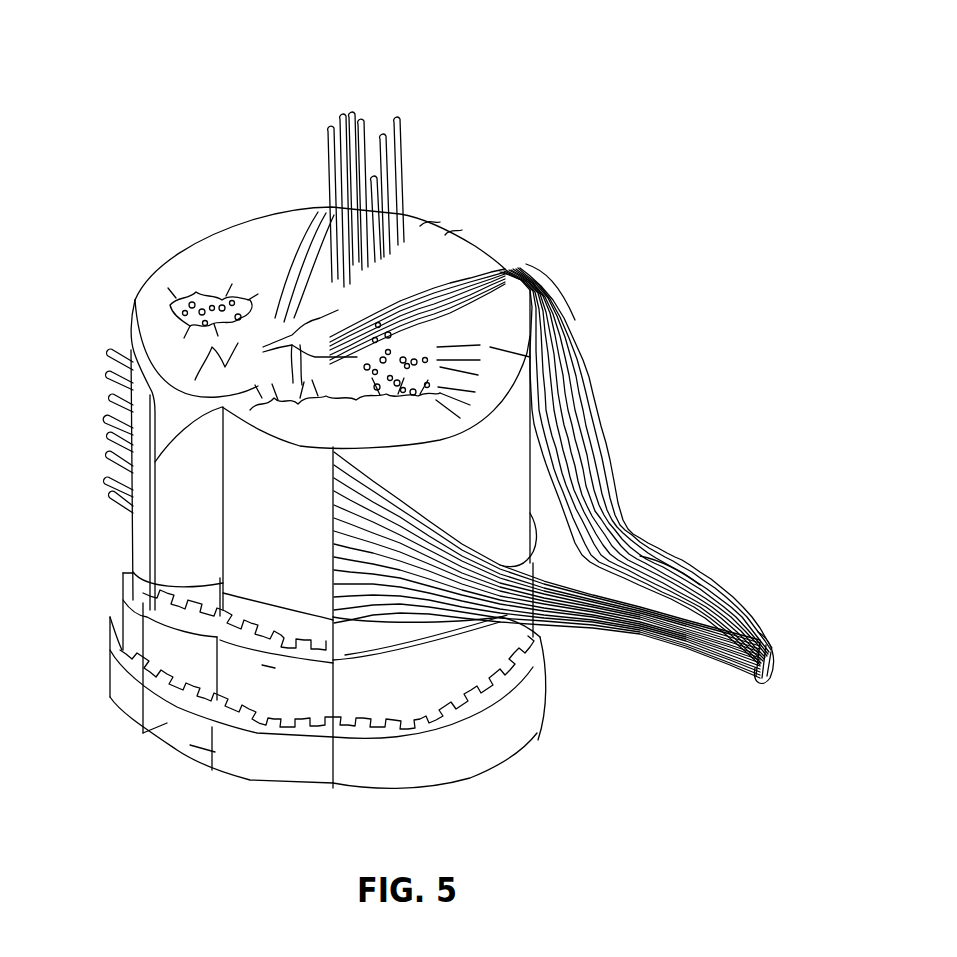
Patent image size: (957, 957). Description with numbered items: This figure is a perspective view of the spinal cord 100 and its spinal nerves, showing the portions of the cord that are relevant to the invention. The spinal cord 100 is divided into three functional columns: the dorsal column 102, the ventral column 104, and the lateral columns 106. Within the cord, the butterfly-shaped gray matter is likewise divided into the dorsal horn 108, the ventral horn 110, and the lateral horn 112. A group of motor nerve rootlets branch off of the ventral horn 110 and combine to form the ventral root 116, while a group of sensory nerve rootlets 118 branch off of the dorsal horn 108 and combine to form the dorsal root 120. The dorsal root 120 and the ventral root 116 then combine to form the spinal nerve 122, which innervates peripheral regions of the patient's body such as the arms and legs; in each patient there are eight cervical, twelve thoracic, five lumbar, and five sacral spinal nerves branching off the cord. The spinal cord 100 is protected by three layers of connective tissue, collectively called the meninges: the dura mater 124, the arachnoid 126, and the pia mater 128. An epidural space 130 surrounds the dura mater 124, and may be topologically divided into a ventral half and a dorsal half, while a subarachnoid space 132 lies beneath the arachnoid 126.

The spinal cord 100 is at (570, 121).
The dorsal column 102 is at (433, 230).
The ventral column 104 is at (107, 481).
The lateral columns 106 is at (210, 250).
The dorsal horn 108 is at (269, 305).
The ventral horn 110 is at (108, 435).
The lateral horn 112 is at (135, 300).
The ventral root 116 is at (577, 623).
The sensory nerve rootlets 118 is at (573, 335).
The dorsal root 120 is at (680, 563).
The spinal nerve 122 is at (747, 680).
The dura mater 124 is at (140, 733).
The arachnoid 126 is at (120, 640).
The pia mater 128 is at (123, 573).
The epidural space 130 is at (210, 737).
The subarachnoid space 132 is at (273, 650).